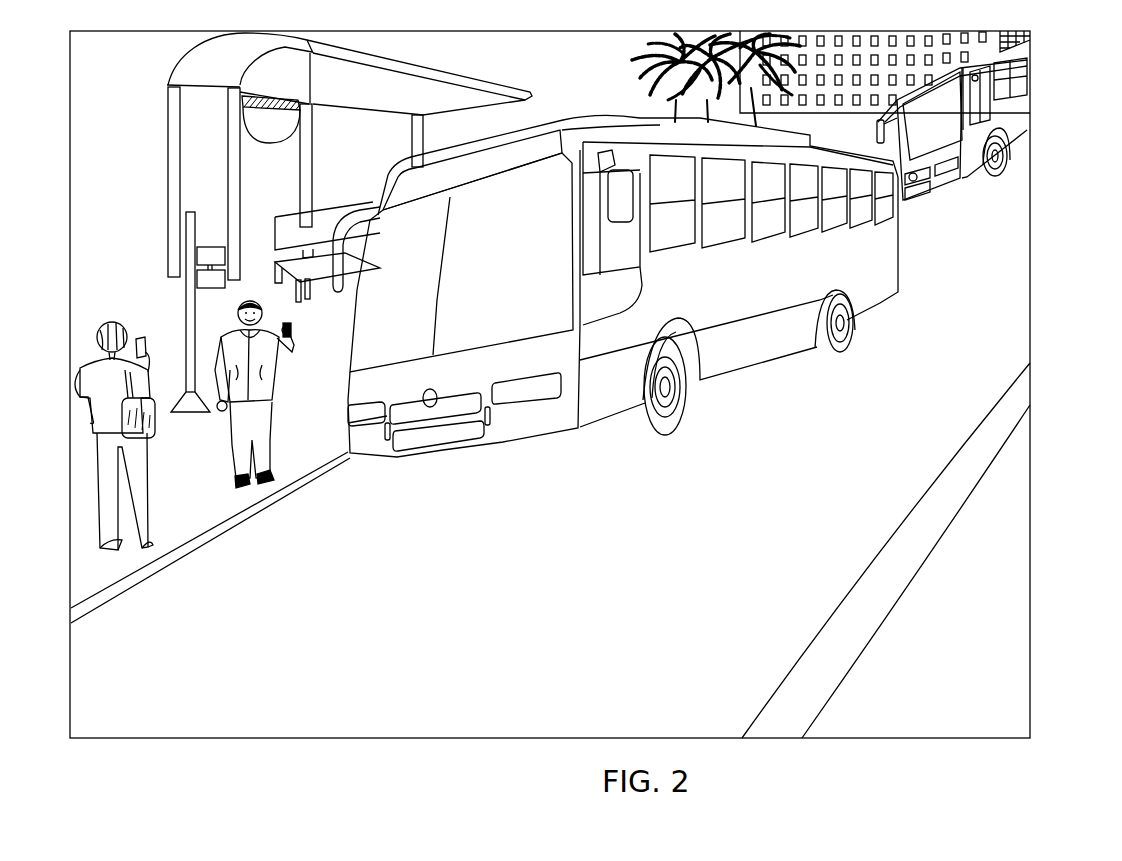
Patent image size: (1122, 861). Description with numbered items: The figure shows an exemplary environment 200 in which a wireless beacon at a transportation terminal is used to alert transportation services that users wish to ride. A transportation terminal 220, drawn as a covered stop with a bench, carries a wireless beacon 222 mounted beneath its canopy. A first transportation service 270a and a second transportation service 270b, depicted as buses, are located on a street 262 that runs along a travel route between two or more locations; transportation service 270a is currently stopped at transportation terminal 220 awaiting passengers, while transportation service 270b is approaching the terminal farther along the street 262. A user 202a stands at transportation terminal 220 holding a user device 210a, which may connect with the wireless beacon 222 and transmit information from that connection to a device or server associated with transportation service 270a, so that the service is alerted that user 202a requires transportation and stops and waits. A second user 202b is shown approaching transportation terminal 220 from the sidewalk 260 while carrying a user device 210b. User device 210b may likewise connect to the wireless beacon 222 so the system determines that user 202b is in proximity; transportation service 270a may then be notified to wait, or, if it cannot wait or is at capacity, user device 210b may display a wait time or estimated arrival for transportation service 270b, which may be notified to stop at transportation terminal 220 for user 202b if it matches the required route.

The environment 200 is at (1048, 59).
The user 202a is at (262, 382).
The user 202b is at (113, 322).
The user device 210a is at (291, 326).
The user device 210b is at (157, 318).
The transportation terminal 220 is at (430, 104).
The wireless beacon 222 is at (275, 128).
The sidewalk 260 is at (180, 523).
The street 262 is at (467, 718).
The transportation service 270a is at (587, 117).
The transportation service 270b is at (1020, 113).